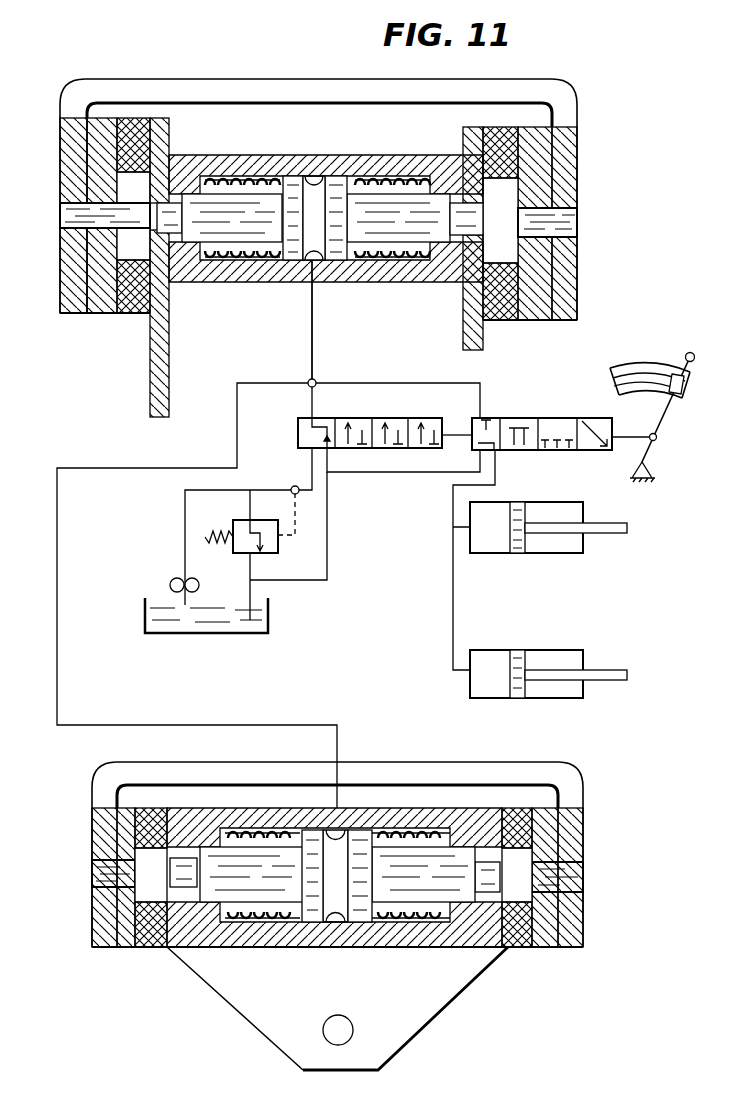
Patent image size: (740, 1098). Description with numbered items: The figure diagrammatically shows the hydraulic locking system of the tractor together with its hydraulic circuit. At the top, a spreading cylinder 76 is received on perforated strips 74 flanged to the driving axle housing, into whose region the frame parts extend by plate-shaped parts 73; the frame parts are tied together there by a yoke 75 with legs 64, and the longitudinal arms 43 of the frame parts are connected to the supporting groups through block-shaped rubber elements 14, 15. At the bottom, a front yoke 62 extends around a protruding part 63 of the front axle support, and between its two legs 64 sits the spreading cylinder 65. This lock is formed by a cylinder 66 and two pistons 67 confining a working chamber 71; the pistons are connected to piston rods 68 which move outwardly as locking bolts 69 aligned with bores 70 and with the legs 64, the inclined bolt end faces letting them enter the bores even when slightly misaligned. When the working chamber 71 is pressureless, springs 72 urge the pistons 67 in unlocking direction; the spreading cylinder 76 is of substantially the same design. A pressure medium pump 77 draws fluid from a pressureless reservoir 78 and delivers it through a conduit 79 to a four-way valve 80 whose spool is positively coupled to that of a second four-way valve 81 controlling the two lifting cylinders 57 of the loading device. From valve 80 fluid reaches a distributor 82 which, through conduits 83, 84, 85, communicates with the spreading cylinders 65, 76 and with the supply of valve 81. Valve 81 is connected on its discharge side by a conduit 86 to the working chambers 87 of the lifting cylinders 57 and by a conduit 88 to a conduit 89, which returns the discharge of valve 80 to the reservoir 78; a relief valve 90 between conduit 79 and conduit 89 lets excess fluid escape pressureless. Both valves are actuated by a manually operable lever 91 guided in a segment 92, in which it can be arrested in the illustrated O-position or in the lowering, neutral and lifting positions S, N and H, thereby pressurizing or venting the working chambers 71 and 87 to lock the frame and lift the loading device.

The rubber element 14 is at (153, 945).
The rubber element 15 is at (128, 312).
The longitudinal arm 43 is at (123, 935).
The lifting cylinder 57 is at (506, 555).
The yoke 62 is at (418, 777).
The protruding part 63 is at (413, 1017).
The leg 64 is at (62, 303).
The spreading cylinder 65 is at (437, 935).
The cylinder 66 is at (272, 938).
The piston 67 is at (311, 913).
The piston rod 68 is at (213, 890).
The locking bolt 69 is at (180, 876).
The bore 70 is at (62, 215).
The working chamber 71 is at (313, 175).
The spring 72 is at (272, 913).
The plate-shaped part 73 is at (91, 312).
The perforated strip 74 is at (152, 372).
The yoke 75 is at (213, 85).
The spreading cylinder 76 is at (381, 170).
The pressure medium pump 77 is at (172, 580).
The reservoir 78 is at (147, 622).
The conduit 79 is at (305, 478).
The four-way valve 80 is at (382, 452).
The four-way valve 81 is at (560, 452).
The distributor 82 is at (317, 380).
The conduit 83 is at (308, 382).
The conduit 84 is at (237, 440).
The conduit 85 is at (397, 382).
The conduit 86 is at (452, 605).
The working chamber 87 is at (491, 540).
The conduit 88 is at (420, 474).
The conduit 89 is at (328, 552).
The relief valve 90 is at (240, 548).
The manually operable lever 91 is at (668, 418).
The segment 92 is at (612, 386).